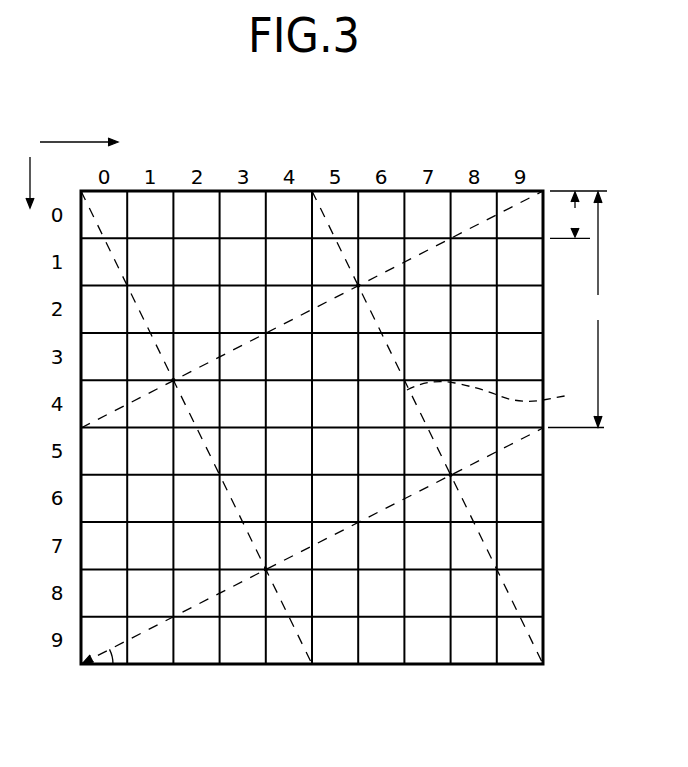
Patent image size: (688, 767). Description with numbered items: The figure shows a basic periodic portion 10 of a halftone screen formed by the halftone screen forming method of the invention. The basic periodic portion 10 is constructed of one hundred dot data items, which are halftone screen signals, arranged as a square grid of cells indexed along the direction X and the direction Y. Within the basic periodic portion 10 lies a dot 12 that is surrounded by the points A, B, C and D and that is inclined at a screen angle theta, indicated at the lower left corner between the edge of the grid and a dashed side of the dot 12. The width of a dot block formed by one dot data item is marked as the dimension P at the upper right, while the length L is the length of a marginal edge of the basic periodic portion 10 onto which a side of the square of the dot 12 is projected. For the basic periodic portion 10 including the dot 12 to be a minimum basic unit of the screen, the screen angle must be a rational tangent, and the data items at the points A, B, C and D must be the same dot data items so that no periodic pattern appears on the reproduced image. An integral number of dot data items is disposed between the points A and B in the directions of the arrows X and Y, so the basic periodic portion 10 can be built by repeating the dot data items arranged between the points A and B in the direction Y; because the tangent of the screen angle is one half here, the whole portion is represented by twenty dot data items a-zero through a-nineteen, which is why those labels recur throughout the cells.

The basic periodic portion 10 is at (553, 561).
The dot 12 is at (501, 395).
The point A is at (358, 285).
The point B is at (173, 380).
The point C is at (266, 571).
The point D is at (451, 476).
The width of a dot block P is at (578, 214).
The length of a marginal edge L is at (576, 310).
The direction X is at (89, 143).
The direction Y is at (28, 194).